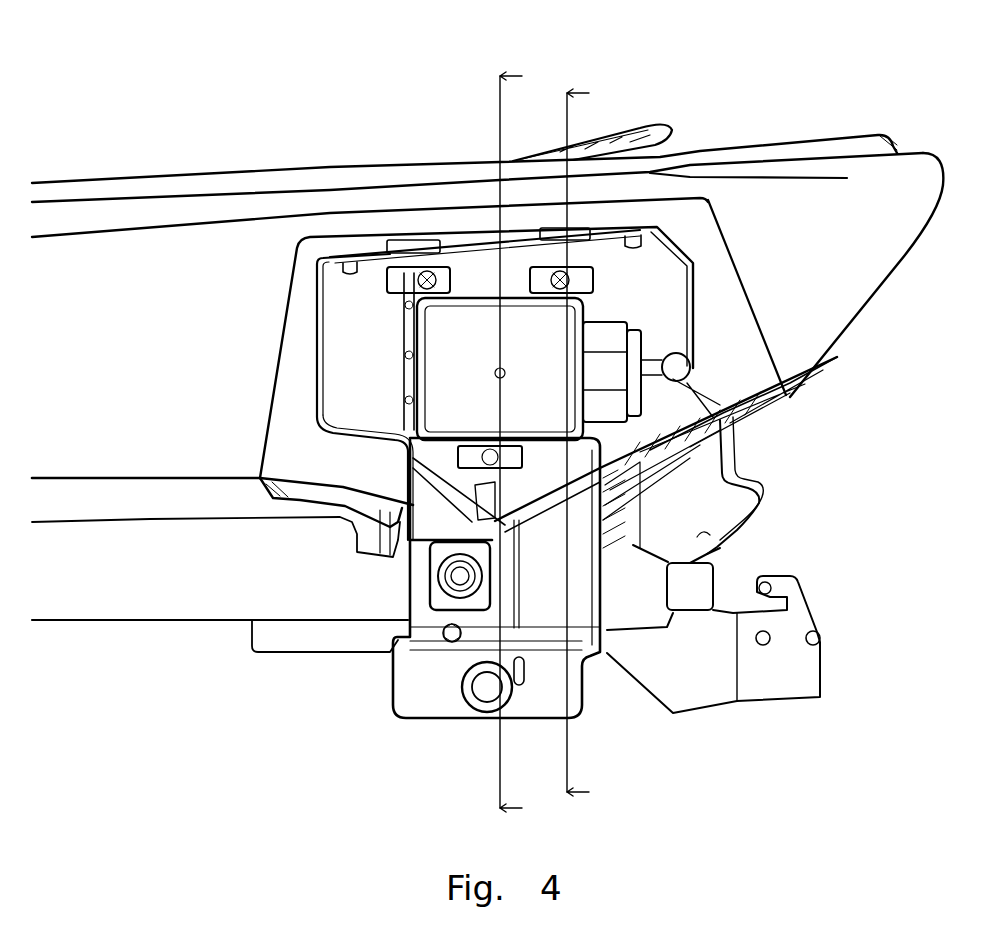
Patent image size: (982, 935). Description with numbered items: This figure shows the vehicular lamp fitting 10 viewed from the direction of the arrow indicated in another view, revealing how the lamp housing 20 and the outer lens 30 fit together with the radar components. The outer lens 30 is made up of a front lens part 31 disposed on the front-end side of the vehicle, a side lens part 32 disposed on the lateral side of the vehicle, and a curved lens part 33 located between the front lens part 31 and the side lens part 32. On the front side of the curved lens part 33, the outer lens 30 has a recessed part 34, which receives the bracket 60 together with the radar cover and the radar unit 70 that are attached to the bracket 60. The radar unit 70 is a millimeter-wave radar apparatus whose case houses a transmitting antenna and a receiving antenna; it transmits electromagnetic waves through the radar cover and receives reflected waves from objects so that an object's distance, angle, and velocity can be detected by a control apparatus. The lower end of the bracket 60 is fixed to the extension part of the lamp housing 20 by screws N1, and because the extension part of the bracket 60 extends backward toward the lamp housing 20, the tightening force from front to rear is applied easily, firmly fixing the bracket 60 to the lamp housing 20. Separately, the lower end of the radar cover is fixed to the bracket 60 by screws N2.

The vehicular lamp fitting 10 is at (474, 70).
The lamp housing 20 is at (320, 166).
The outer lens 30 is at (98, 273).
The front lens part 31 is at (145, 273).
The side lens part 32 is at (853, 197).
The curved lens part 33 is at (461, 218).
The recessed part 34 is at (303, 390).
The bracket 60 is at (607, 605).
The radar unit 70 is at (478, 295).
The screws N1 is at (477, 707).
The screws N2 is at (400, 590).